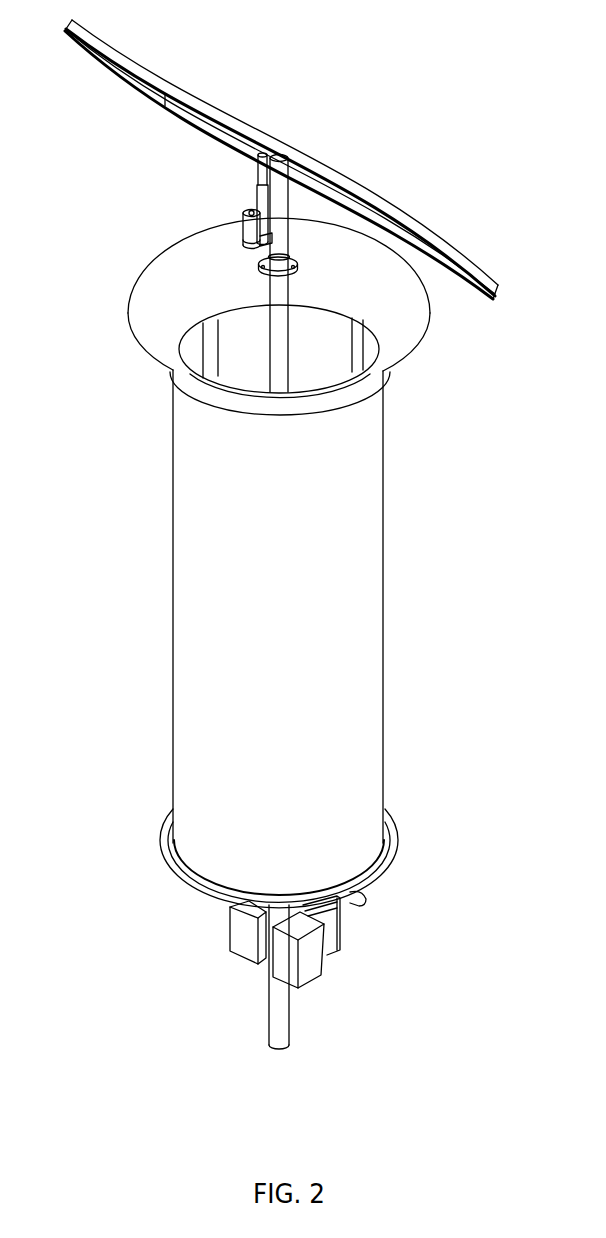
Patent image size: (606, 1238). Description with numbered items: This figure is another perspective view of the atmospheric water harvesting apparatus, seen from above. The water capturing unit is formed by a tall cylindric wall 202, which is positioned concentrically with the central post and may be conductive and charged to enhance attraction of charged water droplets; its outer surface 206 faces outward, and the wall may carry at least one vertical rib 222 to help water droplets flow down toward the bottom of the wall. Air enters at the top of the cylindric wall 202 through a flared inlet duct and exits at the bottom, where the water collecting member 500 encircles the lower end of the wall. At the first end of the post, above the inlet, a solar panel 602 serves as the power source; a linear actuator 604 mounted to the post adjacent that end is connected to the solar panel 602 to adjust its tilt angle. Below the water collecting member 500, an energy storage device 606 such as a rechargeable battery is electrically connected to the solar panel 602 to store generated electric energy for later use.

The cylindric wall 202 is at (327, 632).
The outer surface 206 is at (347, 675).
The vertical rib 222 is at (208, 328).
The water collecting member 500 is at (397, 843).
The solar panel 602 is at (447, 256).
The linear actuator 604 is at (255, 198).
The energy storage device 606 is at (310, 971).